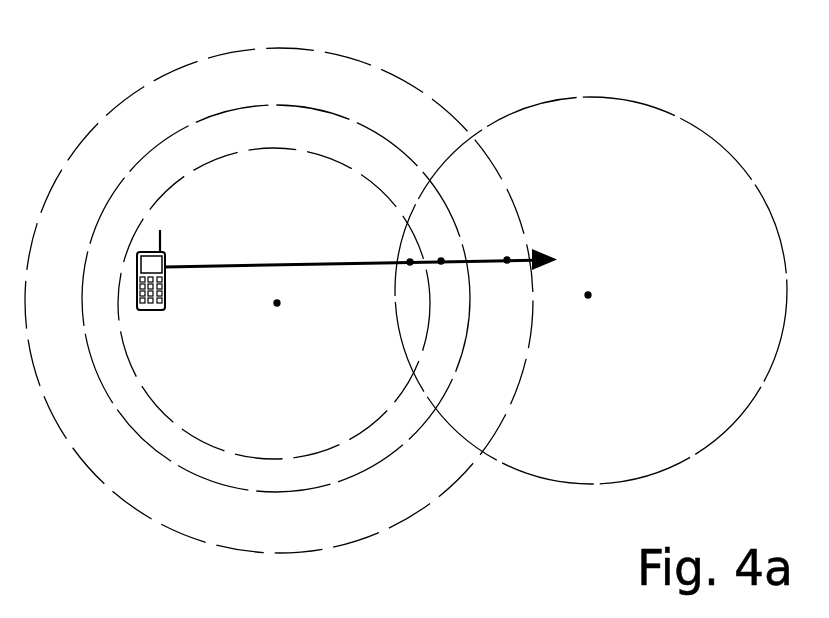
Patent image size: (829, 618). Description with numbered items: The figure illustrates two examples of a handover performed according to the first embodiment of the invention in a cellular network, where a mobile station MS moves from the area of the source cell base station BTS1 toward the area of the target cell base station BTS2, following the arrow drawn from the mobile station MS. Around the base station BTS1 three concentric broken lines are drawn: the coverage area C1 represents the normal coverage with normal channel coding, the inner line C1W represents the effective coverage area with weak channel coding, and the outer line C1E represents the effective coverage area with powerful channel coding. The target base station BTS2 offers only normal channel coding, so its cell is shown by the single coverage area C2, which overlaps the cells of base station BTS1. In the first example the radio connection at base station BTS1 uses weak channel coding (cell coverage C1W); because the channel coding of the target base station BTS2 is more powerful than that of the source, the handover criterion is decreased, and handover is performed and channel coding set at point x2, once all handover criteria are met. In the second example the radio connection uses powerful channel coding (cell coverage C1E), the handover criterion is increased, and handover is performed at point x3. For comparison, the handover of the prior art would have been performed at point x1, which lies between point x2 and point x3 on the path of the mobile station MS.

The cell coverage with powerful channel coding C1E is at (113, 108).
The coverage area C1 is at (124, 175).
The cell coverage with weak channel coding C1W is at (143, 222).
The coverage area C2 is at (735, 157).
The base station BTS1 is at (279, 323).
The base station BTS2 is at (594, 315).
The mobile station MS is at (165, 255).
The point x1 is at (442, 275).
The point x2 is at (409, 276).
The point x3 is at (506, 275).